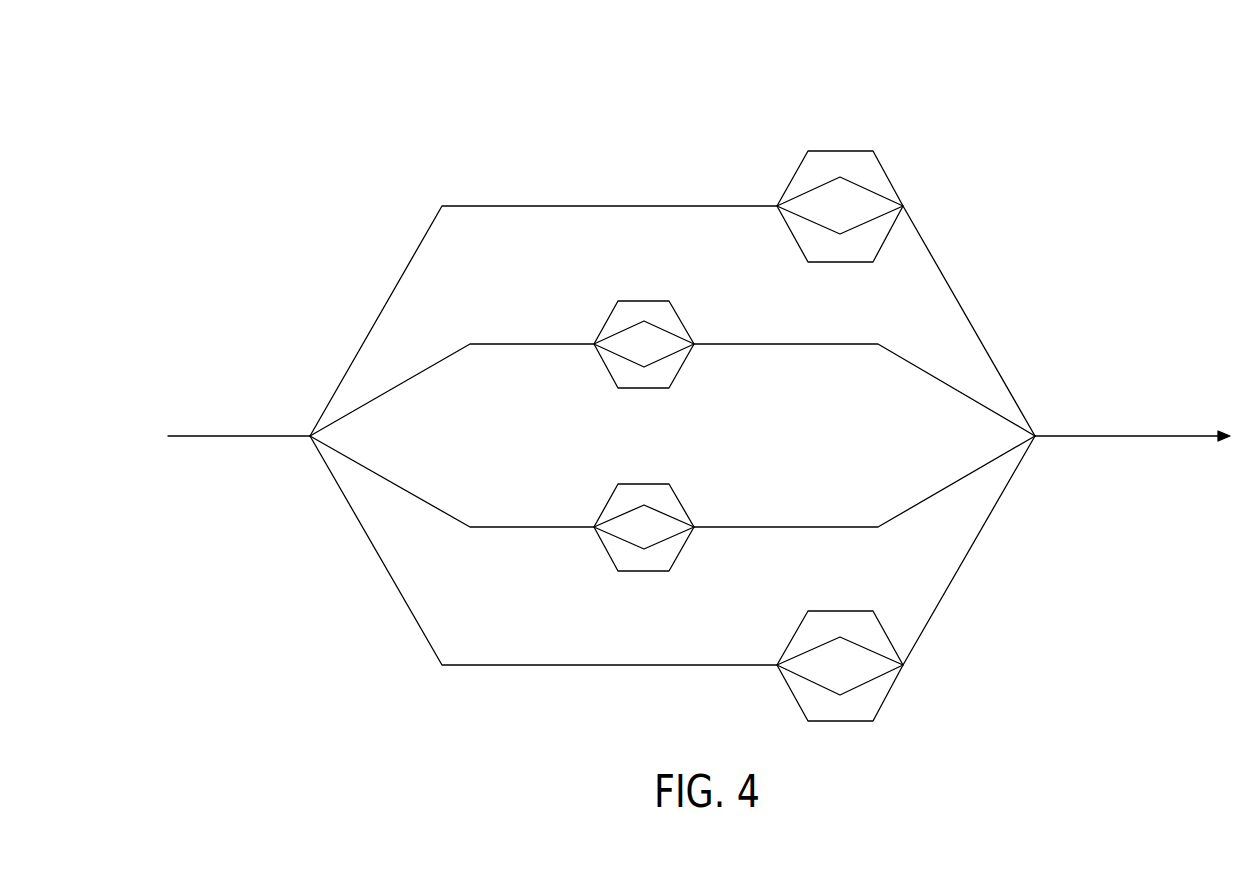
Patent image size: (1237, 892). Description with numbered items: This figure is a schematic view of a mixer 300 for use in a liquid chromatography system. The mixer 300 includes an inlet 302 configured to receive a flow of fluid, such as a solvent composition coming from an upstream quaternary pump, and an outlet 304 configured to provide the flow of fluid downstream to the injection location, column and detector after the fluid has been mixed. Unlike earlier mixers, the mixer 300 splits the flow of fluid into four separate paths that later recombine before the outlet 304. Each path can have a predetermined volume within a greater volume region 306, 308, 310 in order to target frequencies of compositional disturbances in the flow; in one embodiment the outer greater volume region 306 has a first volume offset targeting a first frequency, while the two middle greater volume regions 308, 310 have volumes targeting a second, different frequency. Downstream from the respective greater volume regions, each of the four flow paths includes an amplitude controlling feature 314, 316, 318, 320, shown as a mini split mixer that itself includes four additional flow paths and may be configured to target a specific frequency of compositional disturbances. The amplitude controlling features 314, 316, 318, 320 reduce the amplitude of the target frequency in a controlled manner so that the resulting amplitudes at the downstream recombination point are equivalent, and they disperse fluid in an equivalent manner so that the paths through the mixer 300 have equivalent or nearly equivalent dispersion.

The mixer 300 is at (699, 422).
The inlet 302 is at (221, 435).
The outlet 304 is at (1143, 435).
The greater volume region 306 is at (518, 205).
The greater volume region 308 is at (518, 343).
The greater volume region 310 is at (520, 526).
The amplitude controlling feature 314 is at (839, 150).
The amplitude controlling feature 316 is at (644, 300).
The amplitude controlling feature 318 is at (644, 483).
The amplitude controlling feature 320 is at (838, 722).